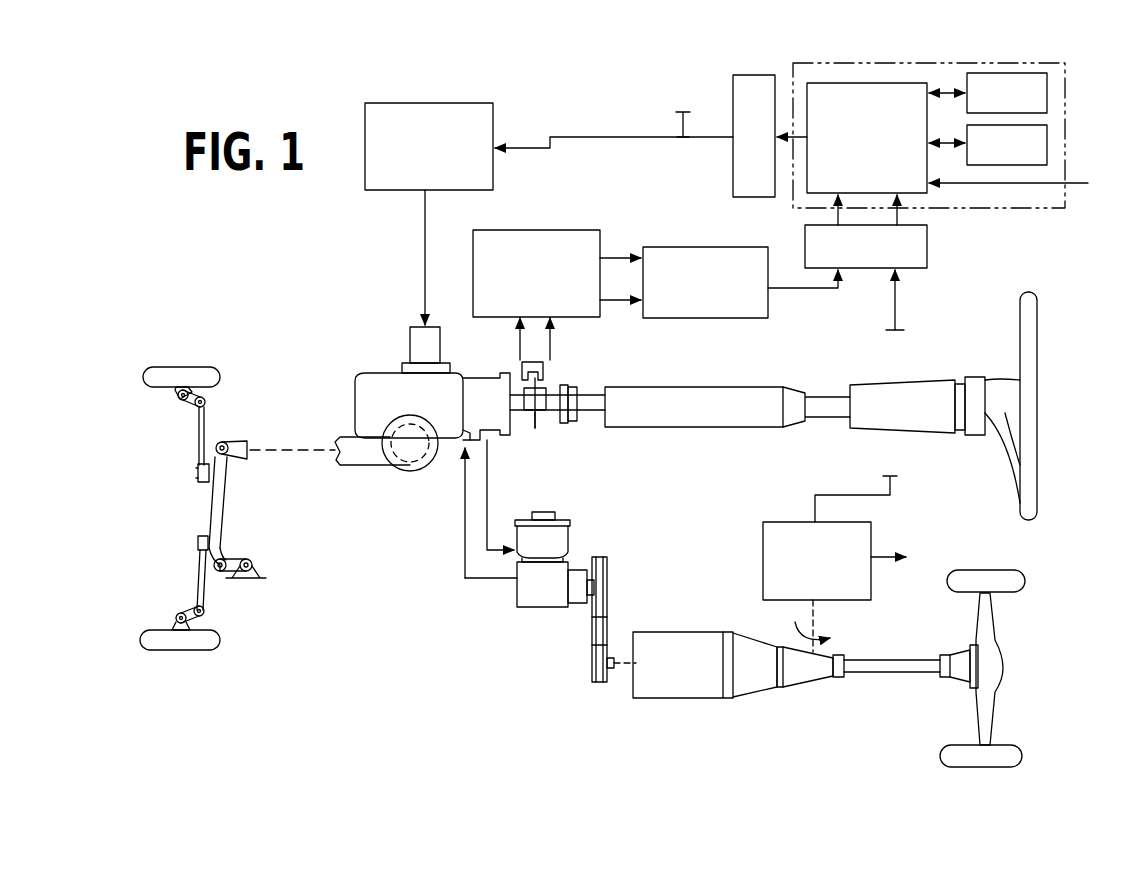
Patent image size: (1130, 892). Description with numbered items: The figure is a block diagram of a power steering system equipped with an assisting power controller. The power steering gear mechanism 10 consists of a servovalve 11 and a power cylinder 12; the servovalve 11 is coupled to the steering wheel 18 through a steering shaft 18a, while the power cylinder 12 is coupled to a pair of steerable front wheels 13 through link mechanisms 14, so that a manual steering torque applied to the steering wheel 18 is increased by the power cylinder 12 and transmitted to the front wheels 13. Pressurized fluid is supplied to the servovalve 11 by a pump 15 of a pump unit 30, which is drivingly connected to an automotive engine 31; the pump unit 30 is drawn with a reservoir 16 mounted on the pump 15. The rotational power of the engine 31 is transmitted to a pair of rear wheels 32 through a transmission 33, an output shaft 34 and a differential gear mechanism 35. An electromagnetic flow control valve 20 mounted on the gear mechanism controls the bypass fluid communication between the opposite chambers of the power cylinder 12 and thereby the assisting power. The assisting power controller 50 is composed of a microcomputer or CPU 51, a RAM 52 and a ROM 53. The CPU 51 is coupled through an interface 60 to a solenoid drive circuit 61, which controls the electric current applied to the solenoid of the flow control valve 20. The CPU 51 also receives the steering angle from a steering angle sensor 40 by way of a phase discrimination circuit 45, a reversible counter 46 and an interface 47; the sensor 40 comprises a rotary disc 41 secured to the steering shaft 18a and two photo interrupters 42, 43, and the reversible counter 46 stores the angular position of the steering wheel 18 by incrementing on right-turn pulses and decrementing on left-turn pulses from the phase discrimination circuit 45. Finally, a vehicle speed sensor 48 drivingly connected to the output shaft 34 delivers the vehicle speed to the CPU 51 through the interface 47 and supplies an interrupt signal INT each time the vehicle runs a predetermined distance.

The power steering gear mechanism 10 is at (394, 414).
The servovalve 11 is at (478, 427).
The power cylinder 12 is at (360, 398).
The steerable front wheels 13 is at (176, 368).
The link mechanisms 14 is at (194, 466).
The pump 15 is at (548, 602).
The oil reservoir 16 is at (558, 540).
The steering wheel 18 is at (1030, 400).
The steering shaft 18a is at (595, 395).
The electromagnetic flow control valve 20 is at (408, 345).
The pump unit 30 is at (539, 568).
The automotive engine 31 is at (678, 692).
The rear wheels 32 is at (1010, 584).
The transmission 33 is at (757, 687).
The output shaft 34 is at (877, 673).
The differential gear mechanism 35 is at (987, 672).
The steering angle sensor 40 is at (578, 428).
The rotary disc 41 is at (538, 420).
The photo interrupter 42 is at (524, 366).
The photo interrupter 43 is at (526, 412).
The phase discrimination circuit 45 is at (565, 222).
The reversible counter 46 is at (688, 248).
The interface 47 is at (928, 248).
The vehicle speed sensor 48 is at (766, 520).
The assisting power controller 50 is at (961, 117).
The microcomputer (CPU) 51 is at (829, 82).
The random access memory (RAM) 52 is at (1042, 142).
The read-only memory (ROM) 53 is at (1045, 90).
The interface 60 is at (753, 75).
The solenoid drive circuit 61 is at (468, 103).